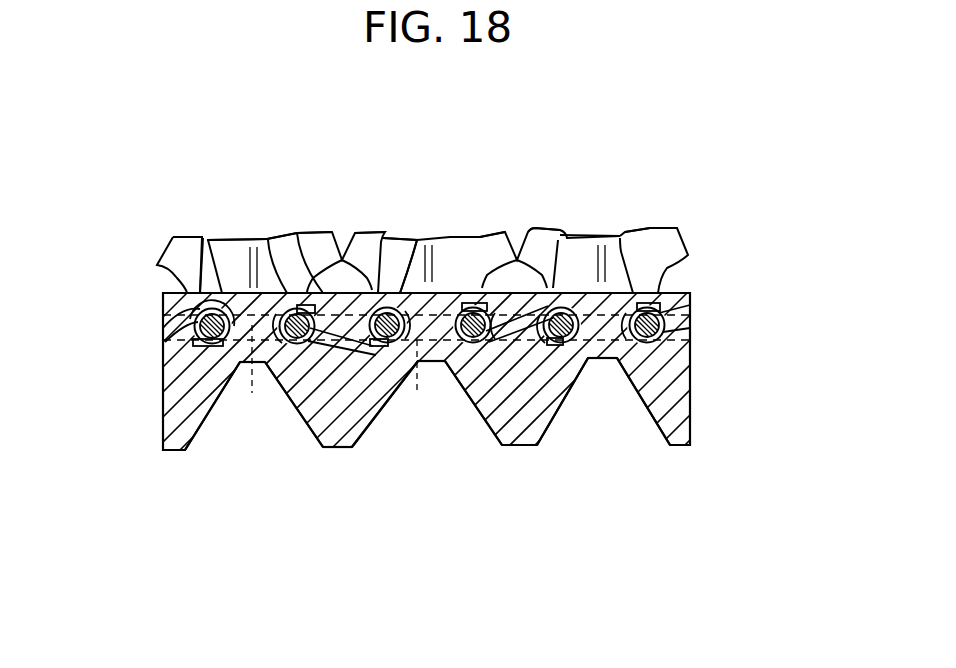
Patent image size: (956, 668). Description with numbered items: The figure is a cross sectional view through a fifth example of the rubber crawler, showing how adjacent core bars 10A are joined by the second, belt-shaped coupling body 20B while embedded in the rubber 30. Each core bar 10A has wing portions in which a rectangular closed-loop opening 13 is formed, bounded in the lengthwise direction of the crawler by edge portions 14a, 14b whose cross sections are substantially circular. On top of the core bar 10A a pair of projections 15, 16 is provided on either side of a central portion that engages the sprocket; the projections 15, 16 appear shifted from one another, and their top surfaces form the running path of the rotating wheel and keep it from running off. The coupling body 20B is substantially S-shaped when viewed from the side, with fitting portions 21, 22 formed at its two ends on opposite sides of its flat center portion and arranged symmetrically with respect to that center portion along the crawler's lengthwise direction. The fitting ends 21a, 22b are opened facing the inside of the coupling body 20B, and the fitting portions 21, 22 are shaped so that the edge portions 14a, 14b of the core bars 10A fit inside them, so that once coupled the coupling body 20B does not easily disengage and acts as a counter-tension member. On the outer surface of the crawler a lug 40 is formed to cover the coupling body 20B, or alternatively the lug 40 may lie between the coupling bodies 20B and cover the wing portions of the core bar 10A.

The core bar 10A is at (704, 226).
The closed-loop opening 13 is at (428, 376).
The edge portion 14a is at (300, 340).
The edge portion 14b is at (218, 348).
The projection 15 is at (363, 250).
The projection 16 is at (472, 246).
The coupling body 20B is at (158, 339).
The fitting portion 21 is at (268, 240).
The fitting end 21a is at (297, 233).
The fitting portion 22 is at (203, 238).
The fitting end 22b is at (163, 405).
The rubber 30 is at (170, 348).
The lug 40 is at (382, 427).